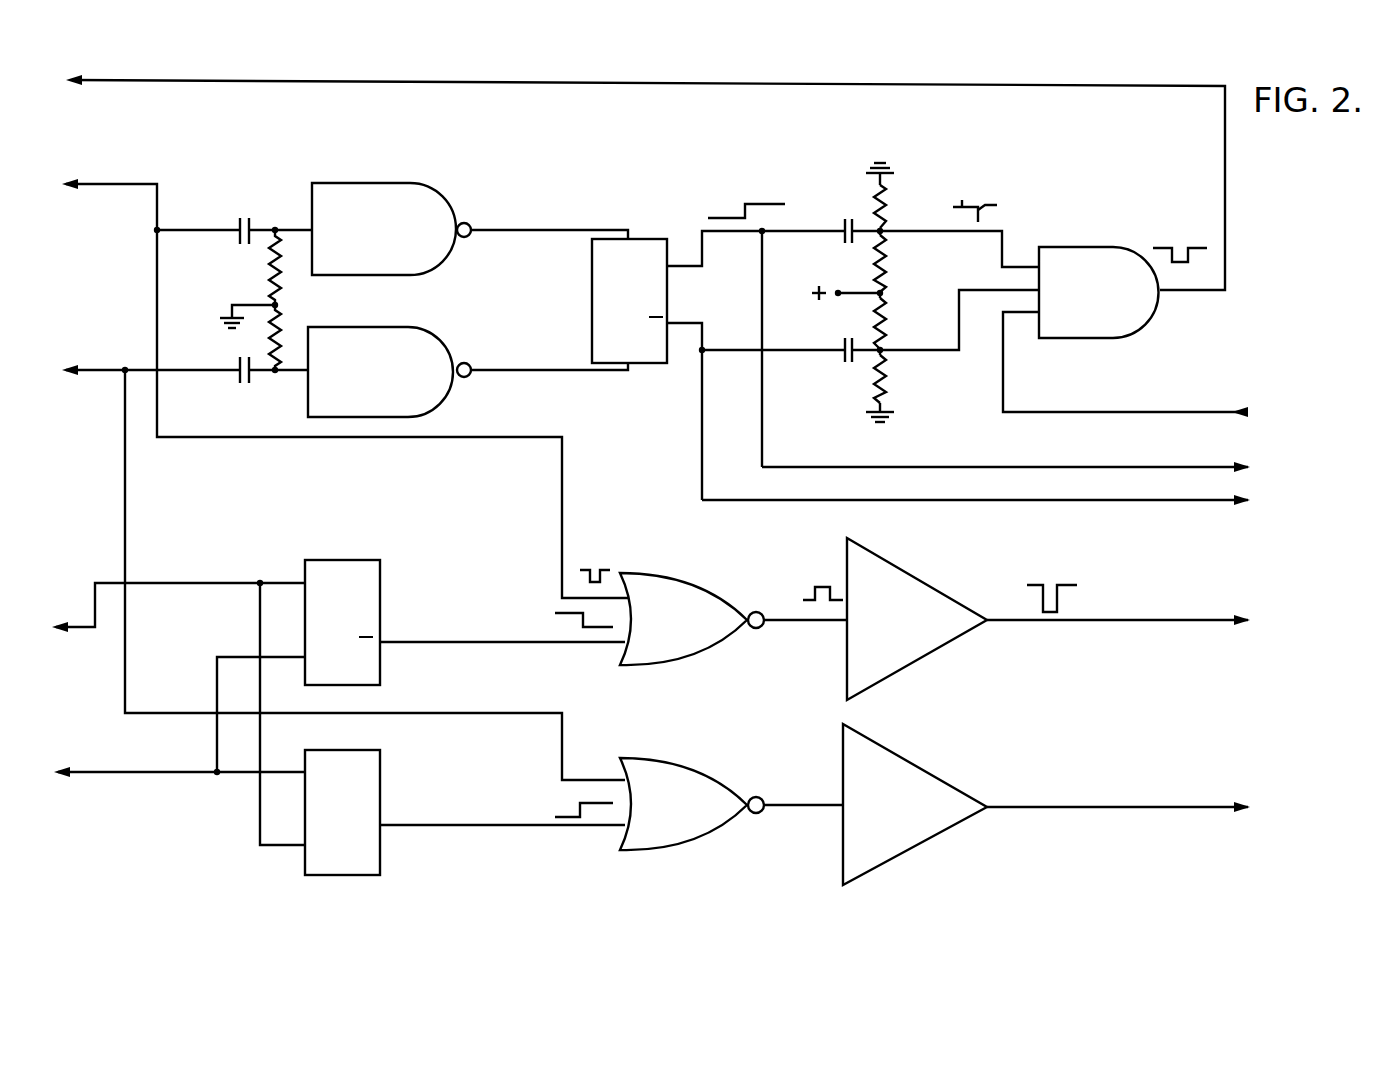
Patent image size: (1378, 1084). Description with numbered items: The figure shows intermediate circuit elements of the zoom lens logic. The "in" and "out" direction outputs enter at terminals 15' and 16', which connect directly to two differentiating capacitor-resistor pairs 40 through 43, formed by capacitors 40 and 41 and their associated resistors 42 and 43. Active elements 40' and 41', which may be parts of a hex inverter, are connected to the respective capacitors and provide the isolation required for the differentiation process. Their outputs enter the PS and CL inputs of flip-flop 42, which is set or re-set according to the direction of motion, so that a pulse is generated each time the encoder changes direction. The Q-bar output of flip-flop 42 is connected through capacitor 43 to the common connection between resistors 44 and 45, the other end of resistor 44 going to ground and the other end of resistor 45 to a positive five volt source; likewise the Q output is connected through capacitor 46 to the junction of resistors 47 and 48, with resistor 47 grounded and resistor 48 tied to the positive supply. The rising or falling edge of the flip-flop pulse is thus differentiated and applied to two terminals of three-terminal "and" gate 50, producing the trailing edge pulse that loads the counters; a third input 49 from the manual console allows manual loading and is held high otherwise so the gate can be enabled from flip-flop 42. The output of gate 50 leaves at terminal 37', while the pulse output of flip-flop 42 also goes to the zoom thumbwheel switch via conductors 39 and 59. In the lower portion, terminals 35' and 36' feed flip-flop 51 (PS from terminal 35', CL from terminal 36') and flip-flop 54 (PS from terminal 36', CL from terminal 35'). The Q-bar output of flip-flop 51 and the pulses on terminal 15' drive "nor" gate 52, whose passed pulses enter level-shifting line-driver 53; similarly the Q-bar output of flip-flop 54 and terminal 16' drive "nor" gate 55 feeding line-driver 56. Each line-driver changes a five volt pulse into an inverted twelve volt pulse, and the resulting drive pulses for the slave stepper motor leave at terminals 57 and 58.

The terminal 37' is at (645, 182).
The terminal 15' is at (345, 388).
The terminal 16' is at (343, 557).
The differentiating capacitor 40 is at (276, 217).
The differentiating capacitor 41 is at (266, 382).
The flip-flop 42 is at (657, 236).
The capacitor 43 is at (279, 332).
The active element 40' is at (404, 221).
The active element 41' is at (405, 363).
The resistor 44 is at (902, 205).
The resistor 45 is at (902, 263).
The capacitor 46 is at (845, 346).
The resistor 47 is at (902, 379).
The resistor 48 is at (902, 323).
The third input 49 is at (1166, 414).
The three-terminal and gate 50 is at (1116, 247).
The conductor 39 is at (1170, 470).
The conductor 59 is at (1170, 505).
The flip-flop 51 is at (380, 574).
The nor gate 52 is at (705, 588).
The level-shifting line-driver 53 is at (890, 580).
The flip-flop 54 is at (380, 767).
The nor gate 55 is at (705, 775).
The level-shifting line-driver 56 is at (934, 782).
The terminal 57 is at (1232, 623).
The terminal 58 is at (1216, 814).
The terminal 35' is at (178, 712).
The terminal 36' is at (179, 733).